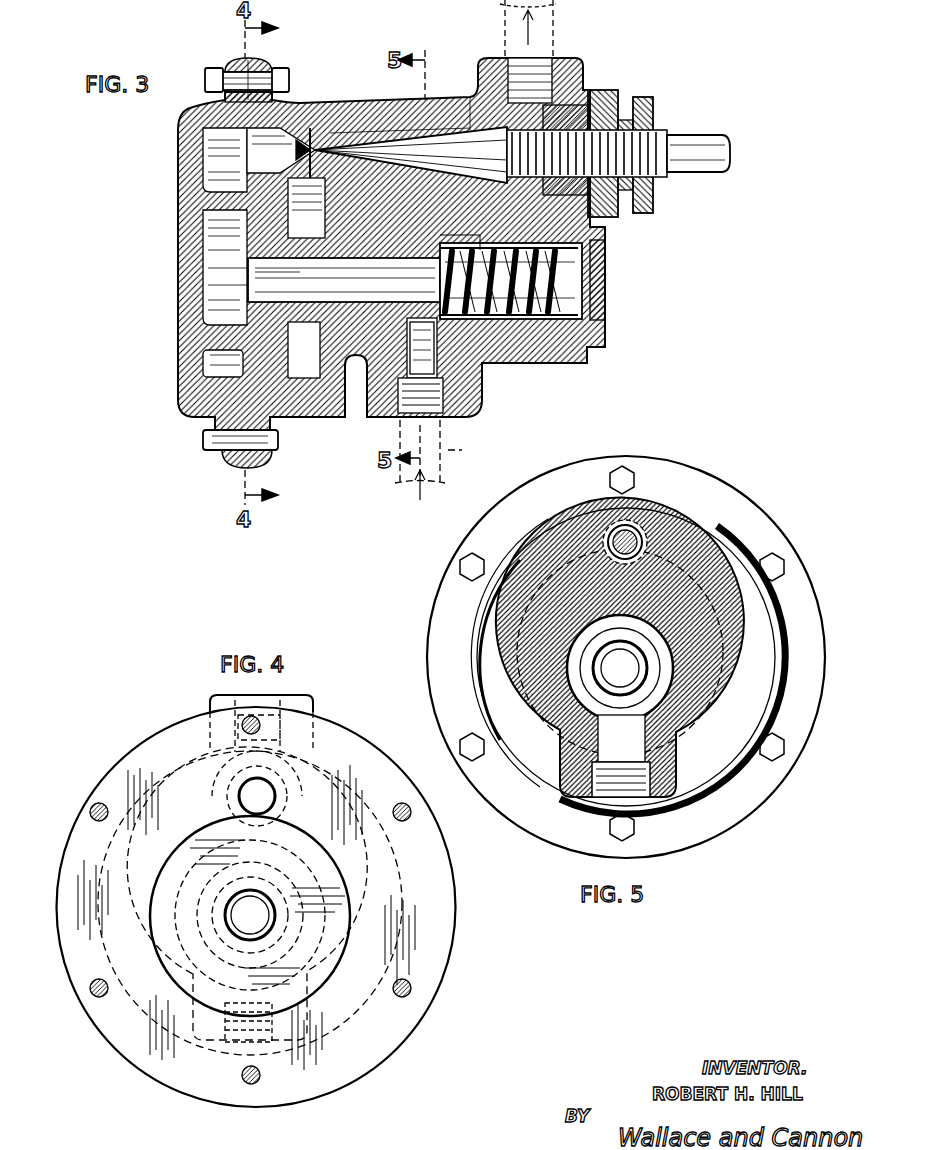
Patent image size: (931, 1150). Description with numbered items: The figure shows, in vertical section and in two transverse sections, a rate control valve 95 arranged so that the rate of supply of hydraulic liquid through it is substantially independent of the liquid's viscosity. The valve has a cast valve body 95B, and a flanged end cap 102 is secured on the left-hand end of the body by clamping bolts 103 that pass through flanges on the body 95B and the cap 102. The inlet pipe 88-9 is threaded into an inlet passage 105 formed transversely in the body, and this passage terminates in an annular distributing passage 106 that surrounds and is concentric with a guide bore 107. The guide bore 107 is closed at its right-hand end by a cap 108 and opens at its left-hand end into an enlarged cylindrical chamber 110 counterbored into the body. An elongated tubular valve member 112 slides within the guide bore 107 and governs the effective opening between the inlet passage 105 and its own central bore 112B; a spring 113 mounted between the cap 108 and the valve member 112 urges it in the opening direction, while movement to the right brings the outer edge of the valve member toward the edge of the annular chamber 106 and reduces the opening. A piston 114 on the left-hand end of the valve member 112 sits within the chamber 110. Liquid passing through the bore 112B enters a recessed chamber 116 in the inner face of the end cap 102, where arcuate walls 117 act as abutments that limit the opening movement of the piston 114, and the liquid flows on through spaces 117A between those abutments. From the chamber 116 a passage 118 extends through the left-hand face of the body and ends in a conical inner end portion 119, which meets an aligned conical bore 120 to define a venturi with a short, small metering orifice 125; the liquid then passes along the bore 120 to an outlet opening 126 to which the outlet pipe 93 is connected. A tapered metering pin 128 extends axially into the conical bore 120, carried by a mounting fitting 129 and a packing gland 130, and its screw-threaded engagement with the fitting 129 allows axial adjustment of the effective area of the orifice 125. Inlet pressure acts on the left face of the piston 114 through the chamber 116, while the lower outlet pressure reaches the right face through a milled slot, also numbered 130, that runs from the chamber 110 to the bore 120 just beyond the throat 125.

In FIG. 3, the outlet pipe 93 is at (553, 16).
In FIG. 3, the rate control valve 95 is at (632, 323).
In FIG. 4, the rate control valve 95 is at (458, 993).
In FIG. 5, the rate control valve 95 is at (772, 498).
In FIG. 3, the valve body 95B is at (398, 115).
In FIG. 5, the valve body 95B is at (688, 540).
In FIG. 3, the flanged end cap 102 is at (180, 385).
In FIG. 3, the clamping bolts 103 is at (225, 458).
In FIG. 4, the clamping bolts 103 is at (410, 818).
In FIG. 5, the clamping bolts 103 is at (462, 566).
In FIG. 3, the inlet passage 105 is at (440, 375).
In FIG. 4, the inlet passage 105 is at (213, 945).
In FIG. 5, the inlet passage 105 is at (640, 790).
In FIG. 3, the annular distributing passage 106 is at (428, 348).
In FIG. 4, the annular distributing passage 106 is at (200, 900).
In FIG. 5, the annular distributing passage 106 is at (655, 700).
In FIG. 3, the guide bore 107 is at (520, 328).
In FIG. 4, the guide bore 107 is at (205, 920).
In FIG. 3, the cap 108 is at (606, 270).
In FIG. 3, the cylindrical chamber 110 is at (303, 378).
In FIG. 4, the cylindrical chamber 110 is at (348, 876).
In FIG. 3, the tubular valve member 112 is at (395, 318).
In FIG. 5, the tubular valve member 112 is at (650, 740).
In FIG. 3, the bore of the valve member 112B is at (290, 276).
In FIG. 4, the bore of the valve member 112B is at (262, 905).
In FIG. 3, the spring 113 is at (560, 285).
In FIG. 3, the piston 114 is at (265, 345).
In FIG. 4, the piston 114 is at (330, 949).
In FIG. 3, the recessed chamber 116 is at (225, 175).
In FIG. 3, the arcuate walls 117 is at (225, 232).
In FIG. 3, the spaces 117A is at (230, 292).
In FIG. 3, the passage 118 is at (285, 140).
In FIG. 4, the passage 118 is at (218, 786).
In FIG. 3, the conical inner end portion 119 is at (311, 128).
In FIG. 4, the conical inner end portion 119 is at (255, 805).
In FIG. 3, the conical bore 120 is at (462, 120).
In FIG. 4, the conical bore 120 is at (310, 763).
In FIG. 5, the conical bore 120 is at (620, 528).
In FIG. 3, the metering orifice 125 is at (312, 145).
In FIG. 4, the metering orifice 125 is at (250, 790).
In FIG. 3, the outlet opening 126 is at (535, 100).
In FIG. 4, the outlet opening 126 is at (270, 748).
In FIG. 3, the tapered metering pin 128 is at (430, 138).
In FIG. 5, the tapered metering pin 128 is at (640, 522).
In FIG. 3, the mounting fitting 129 is at (610, 100).
In FIG. 3, the packing gland 130 is at (312, 180).
In FIG. 4, the packing gland 130 is at (215, 792).
In FIG. 5, the packing gland 130 is at (715, 545).
In FIG. 3, the inlet pipe 88-9 is at (480, 450).